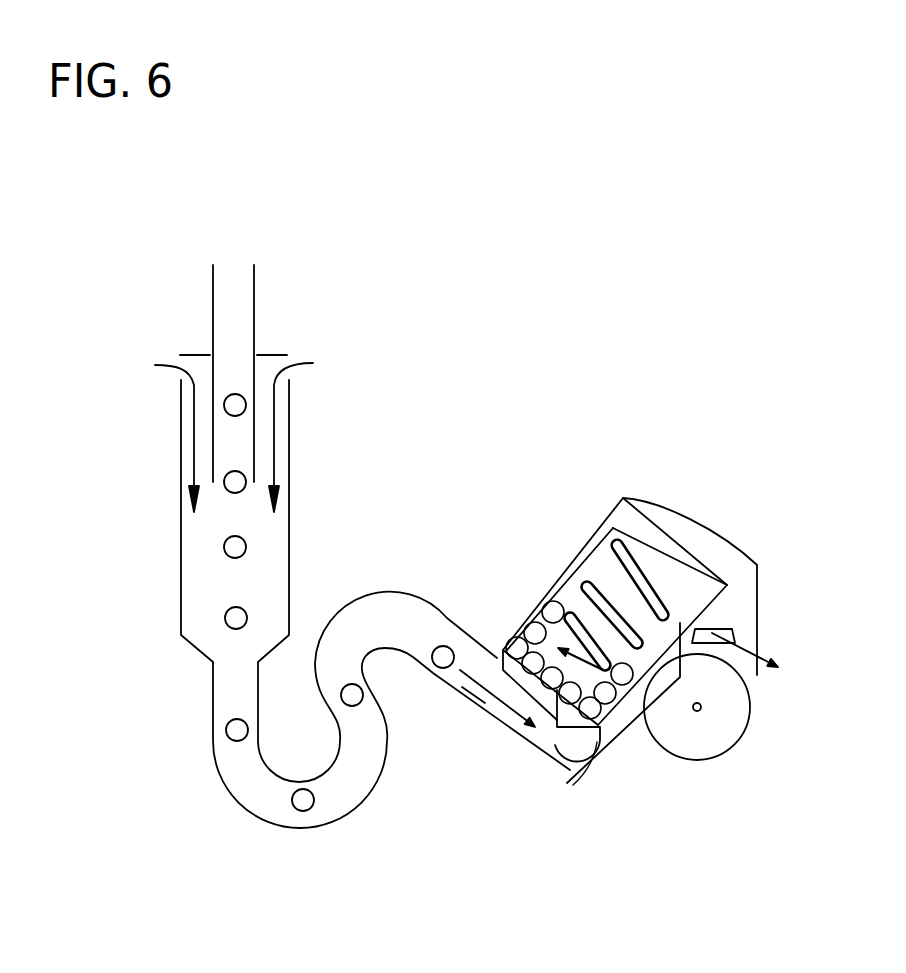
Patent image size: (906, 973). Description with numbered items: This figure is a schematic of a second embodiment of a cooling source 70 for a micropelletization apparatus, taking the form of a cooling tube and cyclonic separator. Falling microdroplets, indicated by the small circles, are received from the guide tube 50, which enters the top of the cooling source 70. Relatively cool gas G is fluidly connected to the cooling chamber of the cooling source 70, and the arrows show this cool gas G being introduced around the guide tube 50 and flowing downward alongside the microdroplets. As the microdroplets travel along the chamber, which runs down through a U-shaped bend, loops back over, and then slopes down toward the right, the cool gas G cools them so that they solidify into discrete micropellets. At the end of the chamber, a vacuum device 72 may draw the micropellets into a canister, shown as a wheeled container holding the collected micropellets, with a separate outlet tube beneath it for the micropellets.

The guide tube 50 is at (255, 300).
The cooling source 70 is at (333, 490).
The vacuum device 72 is at (572, 568).
The gas G is at (273, 447).